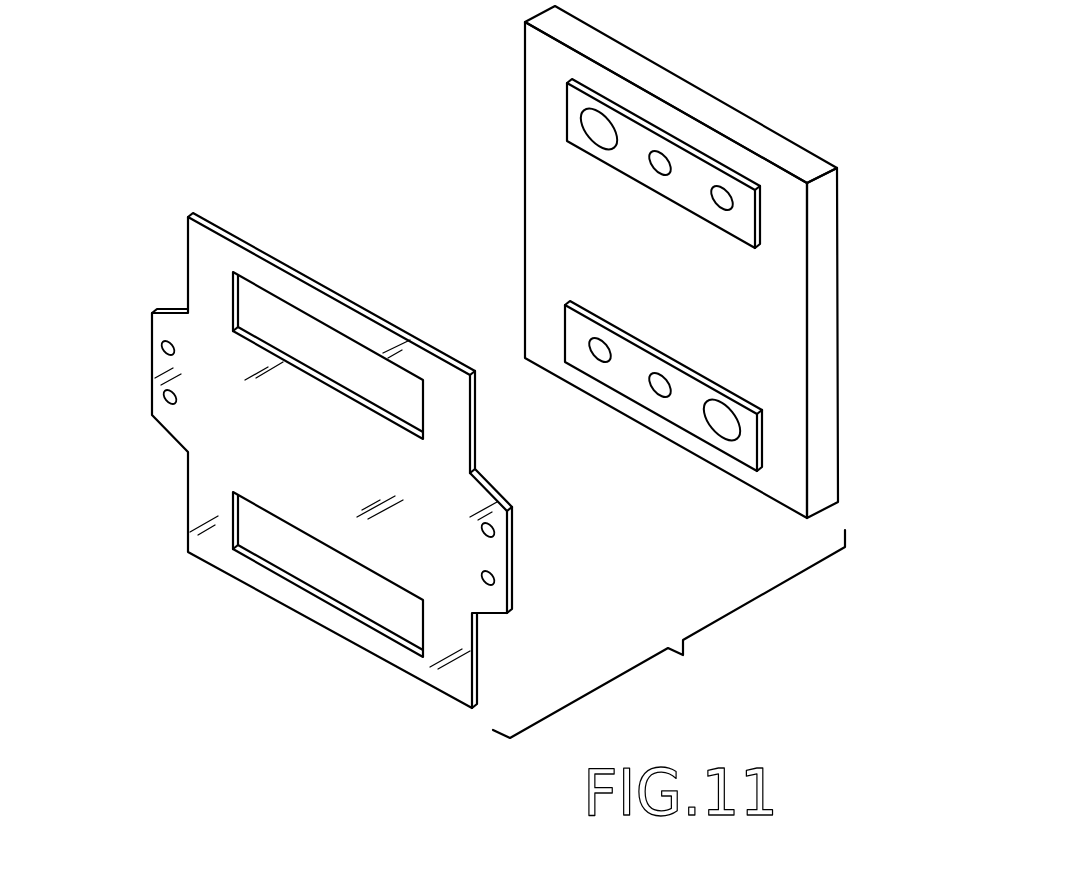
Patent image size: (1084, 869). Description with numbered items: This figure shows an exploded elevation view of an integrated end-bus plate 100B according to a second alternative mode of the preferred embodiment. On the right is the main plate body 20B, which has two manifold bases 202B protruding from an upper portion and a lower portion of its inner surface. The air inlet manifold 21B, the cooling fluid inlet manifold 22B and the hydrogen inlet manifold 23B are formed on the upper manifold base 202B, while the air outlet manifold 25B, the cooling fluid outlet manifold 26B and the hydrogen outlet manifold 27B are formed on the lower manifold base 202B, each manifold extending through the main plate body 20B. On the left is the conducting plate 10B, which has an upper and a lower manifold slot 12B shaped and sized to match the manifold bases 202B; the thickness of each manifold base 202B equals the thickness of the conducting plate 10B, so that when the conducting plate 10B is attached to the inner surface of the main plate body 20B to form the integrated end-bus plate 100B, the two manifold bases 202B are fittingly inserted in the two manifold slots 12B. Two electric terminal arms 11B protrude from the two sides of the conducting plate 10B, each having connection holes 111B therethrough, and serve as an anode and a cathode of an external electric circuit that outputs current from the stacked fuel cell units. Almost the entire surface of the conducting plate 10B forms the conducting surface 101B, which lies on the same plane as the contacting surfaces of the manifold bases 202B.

The conducting plate 10B is at (450, 668).
The conducting surface 101B is at (360, 441).
The electric terminal arm 11B is at (165, 358).
The connection hole 111B is at (168, 407).
The manifold slot 12B is at (276, 306).
The main plate body 20B is at (830, 351).
The manifold base 202B is at (630, 133).
The air inlet manifold 21B is at (582, 125).
The cooling fluid inlet manifold 22B is at (672, 155).
The hydrogen inlet manifold 23B is at (732, 190).
The air outlet manifold 25B is at (737, 440).
The cooling fluid outlet manifold 26B is at (658, 397).
The hydrogen outlet manifold 27B is at (600, 365).
The integrated end-bus plate 100B is at (669, 634).